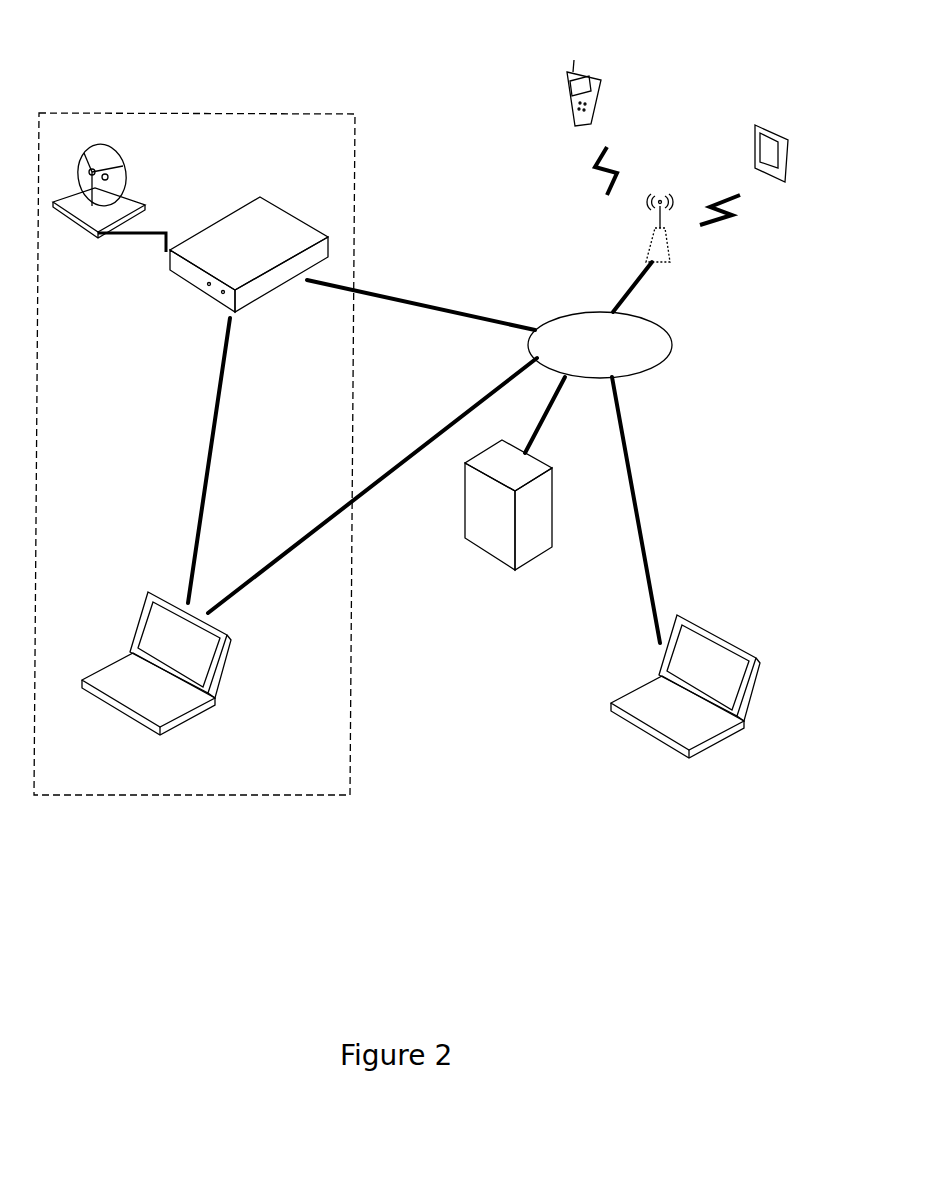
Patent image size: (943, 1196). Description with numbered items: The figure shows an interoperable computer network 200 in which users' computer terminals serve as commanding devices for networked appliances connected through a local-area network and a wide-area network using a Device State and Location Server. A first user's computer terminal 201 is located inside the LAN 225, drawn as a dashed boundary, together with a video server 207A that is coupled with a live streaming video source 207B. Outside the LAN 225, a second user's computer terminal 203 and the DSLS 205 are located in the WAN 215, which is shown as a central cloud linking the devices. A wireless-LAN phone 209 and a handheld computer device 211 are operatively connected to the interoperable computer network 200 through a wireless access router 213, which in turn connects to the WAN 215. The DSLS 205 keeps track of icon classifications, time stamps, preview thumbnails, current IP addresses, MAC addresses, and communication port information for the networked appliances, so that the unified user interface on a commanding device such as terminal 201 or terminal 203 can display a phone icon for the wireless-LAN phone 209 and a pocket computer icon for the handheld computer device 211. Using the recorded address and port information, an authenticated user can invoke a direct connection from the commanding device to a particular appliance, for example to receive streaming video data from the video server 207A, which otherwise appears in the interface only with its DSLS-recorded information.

The interoperable computer network 200 is at (403, 935).
The first user's computer terminal 201 is at (156, 663).
The second user's computer terminal 203 is at (685, 686).
The Device State and Location Server (DSLS) 205 is at (508, 505).
The video server 207A is at (213, 254).
The live streaming video source 207B is at (125, 200).
The wireless-LAN phone 209 is at (597, 78).
The handheld computer device 211 is at (777, 137).
The wireless access router 213 is at (663, 253).
The WAN 215 is at (600, 345).
The LAN 225 is at (270, 113).